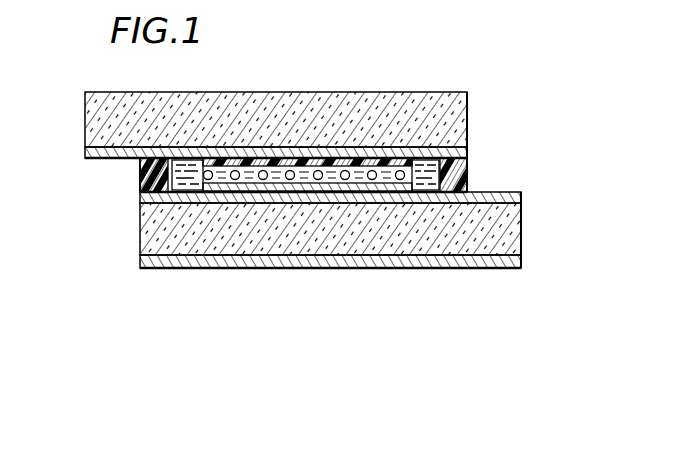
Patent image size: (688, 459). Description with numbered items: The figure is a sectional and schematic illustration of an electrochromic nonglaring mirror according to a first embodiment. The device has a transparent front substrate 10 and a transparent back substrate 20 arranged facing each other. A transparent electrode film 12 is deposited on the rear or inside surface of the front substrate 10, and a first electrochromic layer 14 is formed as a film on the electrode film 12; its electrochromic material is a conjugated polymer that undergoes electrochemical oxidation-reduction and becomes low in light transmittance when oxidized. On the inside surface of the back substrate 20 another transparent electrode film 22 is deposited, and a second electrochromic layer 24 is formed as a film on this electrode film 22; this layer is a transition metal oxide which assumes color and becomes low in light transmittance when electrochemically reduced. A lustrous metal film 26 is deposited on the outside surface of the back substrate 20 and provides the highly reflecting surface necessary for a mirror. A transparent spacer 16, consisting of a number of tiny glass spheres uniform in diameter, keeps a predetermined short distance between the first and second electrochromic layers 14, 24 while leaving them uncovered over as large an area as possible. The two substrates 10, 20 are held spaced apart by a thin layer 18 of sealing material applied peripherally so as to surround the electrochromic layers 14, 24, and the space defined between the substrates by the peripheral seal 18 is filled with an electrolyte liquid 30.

The front substrate 10 is at (90, 108).
The transparent electrode film 12 is at (88, 157).
The first electrochromic layer 14 is at (143, 162).
The transparent spacer 16 is at (440, 165).
The sealing material layer 18 is at (458, 185).
The back substrate 20 is at (518, 237).
The transparent electrode film 22 is at (144, 197).
The second electrochromic layer 24 is at (152, 185).
The lustrous metal film 26 is at (142, 262).
The electrolyte liquid 30 is at (448, 166).